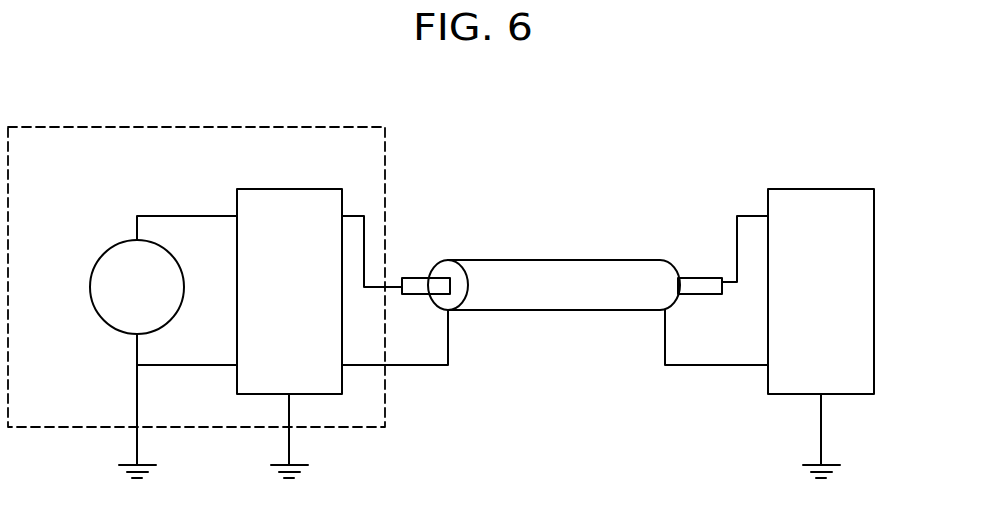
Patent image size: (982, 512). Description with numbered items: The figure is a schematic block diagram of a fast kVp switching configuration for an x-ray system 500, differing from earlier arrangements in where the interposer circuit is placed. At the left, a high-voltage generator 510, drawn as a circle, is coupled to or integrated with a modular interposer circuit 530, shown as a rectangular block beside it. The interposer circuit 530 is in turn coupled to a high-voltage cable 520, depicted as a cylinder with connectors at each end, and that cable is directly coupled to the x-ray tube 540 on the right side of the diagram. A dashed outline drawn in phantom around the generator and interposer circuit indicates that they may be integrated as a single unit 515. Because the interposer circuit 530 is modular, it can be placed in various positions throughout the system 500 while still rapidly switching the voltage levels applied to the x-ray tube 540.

The system 500 is at (640, 67).
The single unit 515 is at (173, 140).
The high-voltage generator 510 is at (106, 254).
The interposer circuit 530 is at (289, 188).
The high-voltage cable 520 is at (553, 260).
The x-ray tube 540 is at (874, 238).